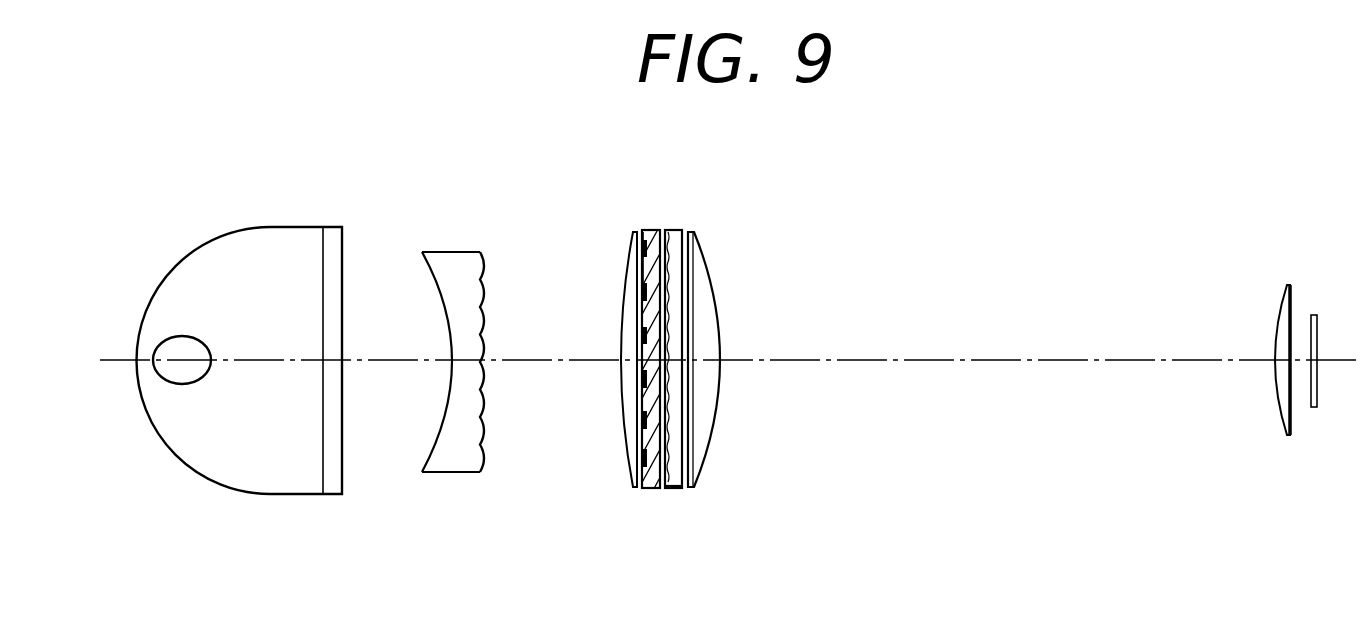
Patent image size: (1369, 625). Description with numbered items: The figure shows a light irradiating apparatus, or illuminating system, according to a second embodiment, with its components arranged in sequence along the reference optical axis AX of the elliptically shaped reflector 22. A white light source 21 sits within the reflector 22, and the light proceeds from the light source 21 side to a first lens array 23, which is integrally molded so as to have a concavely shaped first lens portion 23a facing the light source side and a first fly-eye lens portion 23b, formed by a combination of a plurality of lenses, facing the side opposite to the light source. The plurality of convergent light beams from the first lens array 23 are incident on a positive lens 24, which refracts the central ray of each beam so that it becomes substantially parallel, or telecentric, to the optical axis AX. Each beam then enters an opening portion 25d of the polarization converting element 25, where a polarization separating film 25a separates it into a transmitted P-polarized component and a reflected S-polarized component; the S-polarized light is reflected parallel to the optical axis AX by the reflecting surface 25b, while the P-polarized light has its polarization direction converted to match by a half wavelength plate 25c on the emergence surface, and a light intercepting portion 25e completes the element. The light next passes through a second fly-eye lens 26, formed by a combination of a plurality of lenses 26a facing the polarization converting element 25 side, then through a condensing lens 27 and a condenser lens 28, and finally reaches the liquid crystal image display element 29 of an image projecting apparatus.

The white light source 21 is at (157, 413).
The elliptically shaped reflector 22 is at (223, 250).
The first lens array 23 is at (448, 291).
The first lens portion 23a is at (423, 263).
The first fly-eye lens portion 23b is at (485, 319).
The positive lens 24 is at (633, 248).
The polarization converting element 25 is at (655, 328).
The polarization separating film 25a is at (650, 340).
The reflecting surface 25b is at (643, 318).
The half wavelength plate 25c is at (660, 343).
The opening portion 25d is at (643, 245).
The light intercepting portion 25e is at (642, 262).
The second fly-eye lens 26 is at (675, 230).
The lenses 26a is at (675, 490).
The condensing lens 27 is at (700, 252).
The condenser lens 28 is at (1290, 285).
The liquid crystal image display element 29 is at (1315, 313).
The reference optical axis AX is at (972, 360).